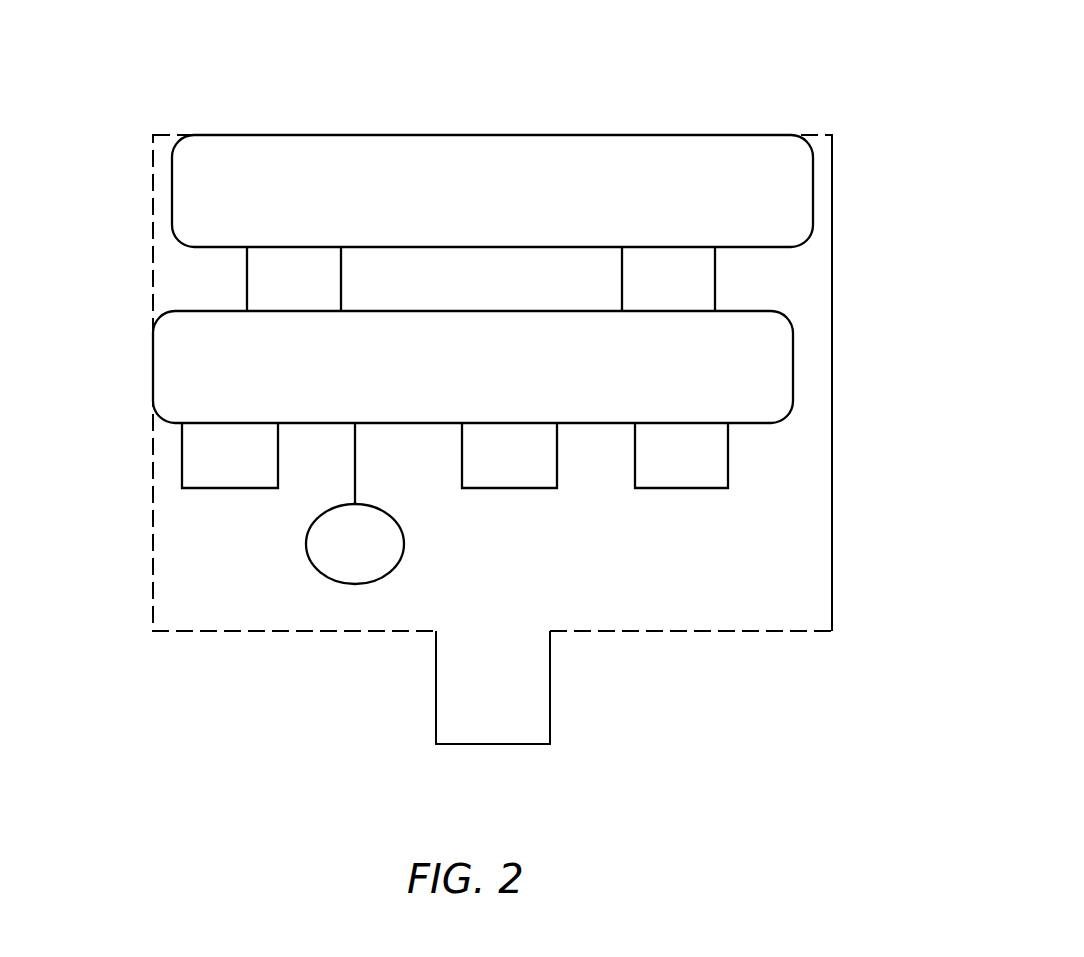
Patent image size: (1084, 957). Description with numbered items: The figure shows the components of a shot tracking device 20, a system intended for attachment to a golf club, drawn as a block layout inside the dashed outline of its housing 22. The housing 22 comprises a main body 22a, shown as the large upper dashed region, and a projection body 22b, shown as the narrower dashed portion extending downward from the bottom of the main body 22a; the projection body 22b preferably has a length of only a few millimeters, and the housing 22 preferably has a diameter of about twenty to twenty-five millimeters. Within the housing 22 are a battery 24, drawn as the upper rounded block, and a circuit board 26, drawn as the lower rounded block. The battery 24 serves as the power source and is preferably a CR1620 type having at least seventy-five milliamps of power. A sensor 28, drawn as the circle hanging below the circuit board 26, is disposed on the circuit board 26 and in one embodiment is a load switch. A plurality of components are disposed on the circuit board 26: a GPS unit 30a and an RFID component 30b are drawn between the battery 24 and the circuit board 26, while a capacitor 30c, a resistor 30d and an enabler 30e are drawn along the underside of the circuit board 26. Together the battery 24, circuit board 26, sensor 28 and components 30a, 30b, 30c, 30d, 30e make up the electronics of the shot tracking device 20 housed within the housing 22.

The shot tracking device 20 is at (643, 69).
The housing 22 is at (153, 135).
The main body 22a is at (832, 305).
The projection body 22b is at (436, 688).
The battery 24 is at (492, 191).
The circuit board 26 is at (473, 367).
The sensor 28 is at (355, 503).
The GPS unit 30a is at (294, 279).
The RFID component 30b is at (668, 279).
The capacitor 30c is at (230, 455).
The resistor 30d is at (509, 455).
The enabler 30e is at (681, 455).